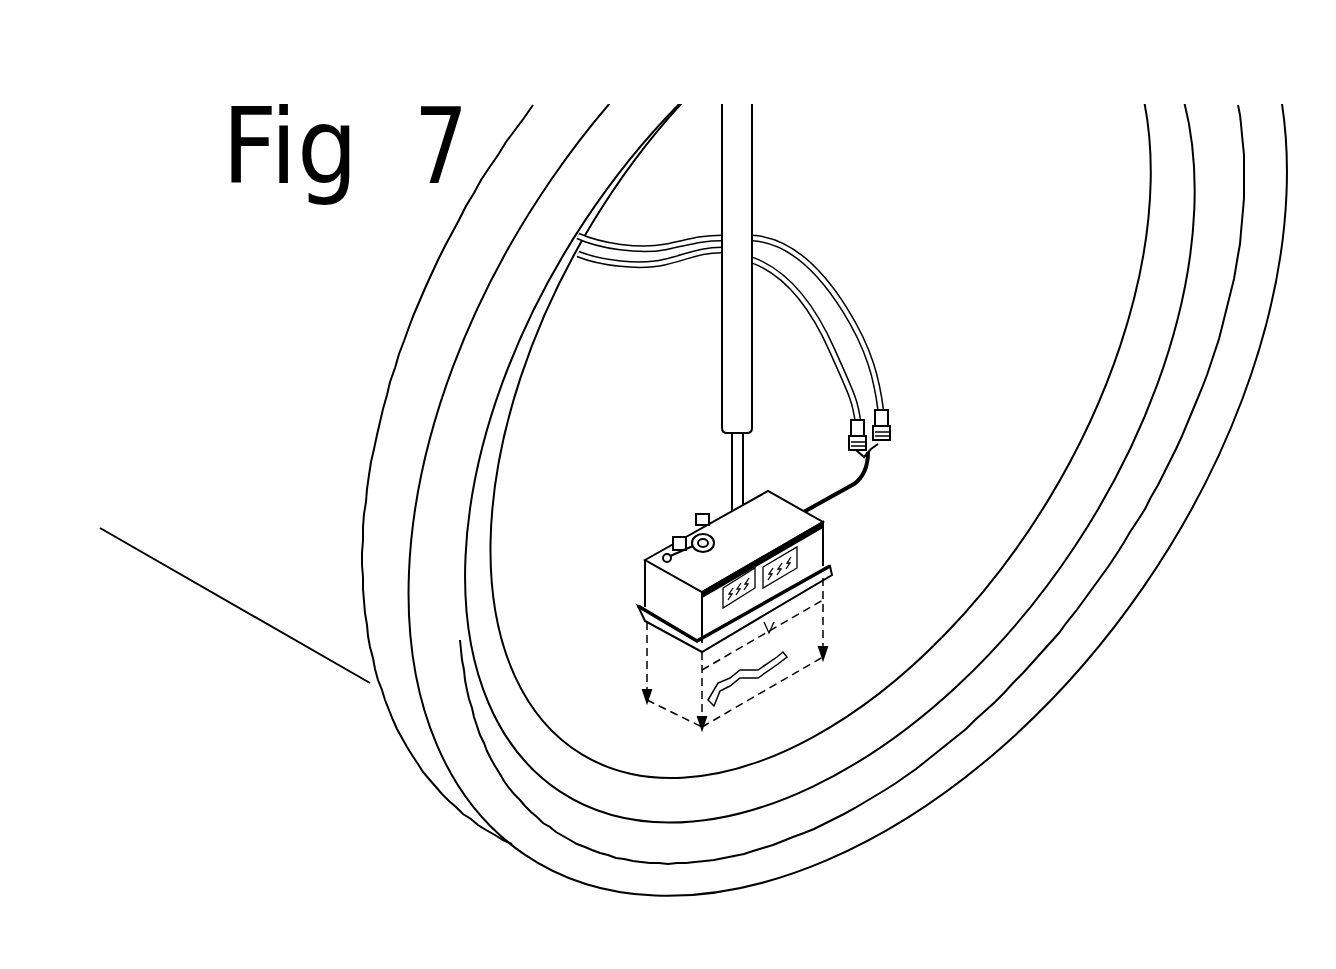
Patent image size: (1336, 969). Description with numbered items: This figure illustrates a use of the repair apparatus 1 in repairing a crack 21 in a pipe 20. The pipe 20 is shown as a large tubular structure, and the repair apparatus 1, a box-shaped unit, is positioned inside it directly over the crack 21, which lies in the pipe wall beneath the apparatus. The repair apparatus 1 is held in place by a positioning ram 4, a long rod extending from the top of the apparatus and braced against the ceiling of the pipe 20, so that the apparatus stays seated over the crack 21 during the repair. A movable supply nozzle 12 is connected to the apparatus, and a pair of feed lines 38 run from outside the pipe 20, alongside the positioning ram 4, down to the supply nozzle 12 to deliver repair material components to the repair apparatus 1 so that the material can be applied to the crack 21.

The repair apparatus 1 is at (660, 533).
The positioning ram 4 is at (730, 280).
The movable supply nozzle 12 is at (873, 477).
The pipe 20 is at (1058, 678).
The crack 21 is at (787, 654).
The feed lines 38 is at (813, 310).